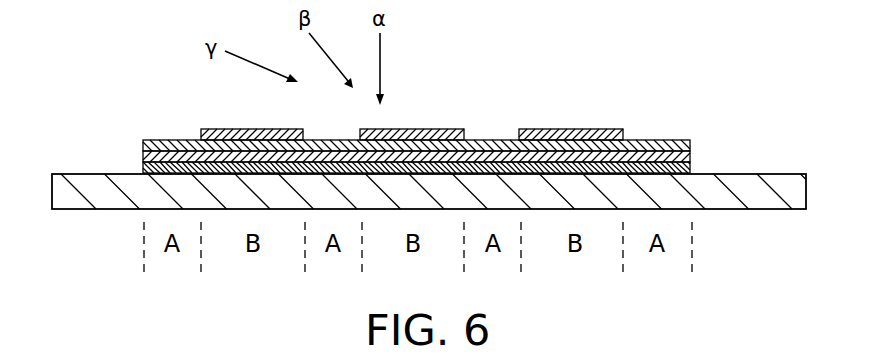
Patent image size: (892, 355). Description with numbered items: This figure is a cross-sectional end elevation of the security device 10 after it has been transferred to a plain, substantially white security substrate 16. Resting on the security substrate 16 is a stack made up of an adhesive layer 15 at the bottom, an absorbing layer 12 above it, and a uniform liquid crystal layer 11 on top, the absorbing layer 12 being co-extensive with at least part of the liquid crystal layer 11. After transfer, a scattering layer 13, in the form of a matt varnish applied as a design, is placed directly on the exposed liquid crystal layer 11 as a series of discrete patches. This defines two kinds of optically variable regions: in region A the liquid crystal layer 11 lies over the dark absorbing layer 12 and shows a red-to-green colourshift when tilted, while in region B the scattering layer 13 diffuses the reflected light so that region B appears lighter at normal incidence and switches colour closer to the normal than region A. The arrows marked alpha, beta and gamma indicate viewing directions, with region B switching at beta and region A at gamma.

The security device 10 is at (200, 130).
The liquid crystal layer 11 is at (690, 145).
The absorbing layer 12 is at (690, 156).
The scattering layer 13 is at (201, 129).
The adhesive layer 15 is at (690, 167).
The security substrate 16 is at (93, 210).